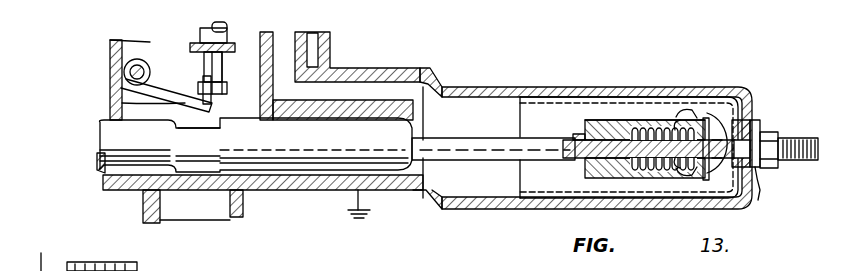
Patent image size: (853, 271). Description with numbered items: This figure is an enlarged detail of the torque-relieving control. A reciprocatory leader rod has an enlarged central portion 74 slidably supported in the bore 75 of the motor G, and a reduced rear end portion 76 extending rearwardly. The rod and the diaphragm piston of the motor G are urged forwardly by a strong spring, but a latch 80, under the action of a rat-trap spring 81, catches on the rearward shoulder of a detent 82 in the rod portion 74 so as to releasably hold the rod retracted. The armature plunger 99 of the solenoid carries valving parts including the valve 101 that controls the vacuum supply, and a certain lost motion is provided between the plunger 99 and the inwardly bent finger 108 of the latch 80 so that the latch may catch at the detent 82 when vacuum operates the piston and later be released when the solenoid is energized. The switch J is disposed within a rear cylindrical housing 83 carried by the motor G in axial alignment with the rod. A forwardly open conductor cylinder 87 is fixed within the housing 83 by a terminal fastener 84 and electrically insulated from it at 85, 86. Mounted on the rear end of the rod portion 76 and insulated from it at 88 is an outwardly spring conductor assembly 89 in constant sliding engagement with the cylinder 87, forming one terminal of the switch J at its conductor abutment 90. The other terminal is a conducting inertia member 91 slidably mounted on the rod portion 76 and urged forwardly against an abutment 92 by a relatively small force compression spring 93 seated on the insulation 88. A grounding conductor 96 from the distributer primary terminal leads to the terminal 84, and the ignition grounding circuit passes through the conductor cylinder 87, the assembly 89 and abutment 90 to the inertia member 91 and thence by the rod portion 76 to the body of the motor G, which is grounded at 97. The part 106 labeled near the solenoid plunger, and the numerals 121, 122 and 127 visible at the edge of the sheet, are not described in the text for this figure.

The enlarged central portion 74 is at (267, 163).
The bore 75 is at (333, 105).
The reduced rear end portion 76 is at (483, 150).
The latch 80 is at (113, 108).
The rat-trap spring 81 is at (166, 85).
The detent 82 is at (197, 160).
The rear cylindrical housing 83 is at (478, 90).
The terminal fastener 84 is at (790, 143).
The insulation 85 is at (537, 100).
The insulation 86 is at (752, 117).
The conductor cylinder 87 is at (627, 90).
The insulation 88 is at (700, 168).
The spring conductor assembly 89 is at (700, 127).
The conductor abutment 90 is at (683, 90).
The inertia member 91 is at (593, 120).
The abutment 92 is at (585, 160).
The compression spring 93 is at (658, 128).
The grounding conductor 96 is at (760, 187).
The ground 97 is at (353, 213).
The armature plunger 99 is at (226, 33).
The valve 101 is at (200, 44).
The bolt stem 106 is at (187, 46).
The inwardly bent finger 108 is at (226, 80).
The motor G is at (110, 60).
The switch J is at (708, 118).
The adjacent figure element 121 is at (8, 262).
The adjacent figure scale 122 is at (103, 267).
The adjacent figure element 127 is at (291, 264).